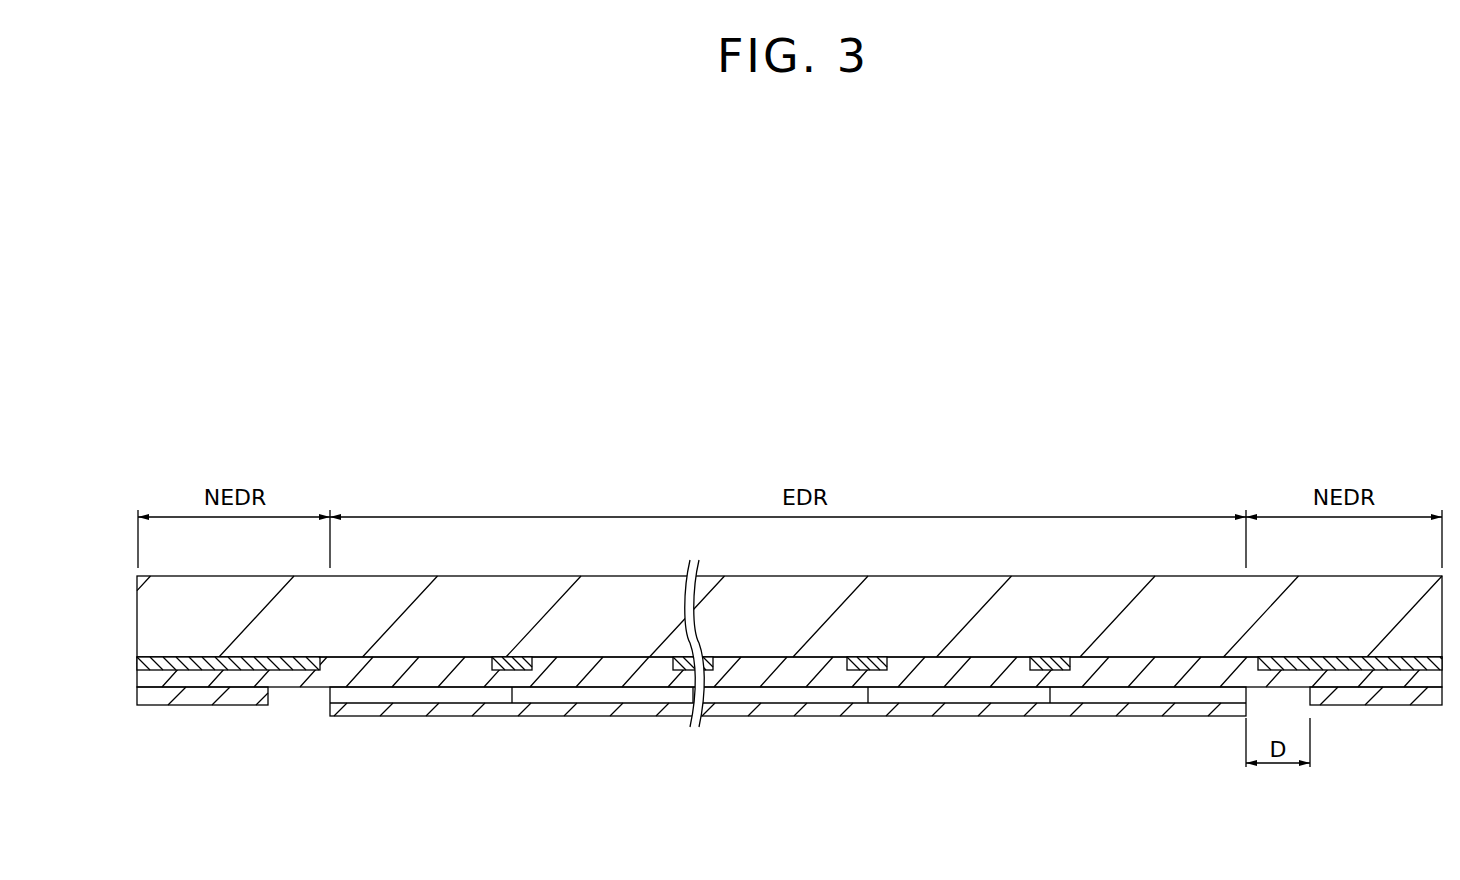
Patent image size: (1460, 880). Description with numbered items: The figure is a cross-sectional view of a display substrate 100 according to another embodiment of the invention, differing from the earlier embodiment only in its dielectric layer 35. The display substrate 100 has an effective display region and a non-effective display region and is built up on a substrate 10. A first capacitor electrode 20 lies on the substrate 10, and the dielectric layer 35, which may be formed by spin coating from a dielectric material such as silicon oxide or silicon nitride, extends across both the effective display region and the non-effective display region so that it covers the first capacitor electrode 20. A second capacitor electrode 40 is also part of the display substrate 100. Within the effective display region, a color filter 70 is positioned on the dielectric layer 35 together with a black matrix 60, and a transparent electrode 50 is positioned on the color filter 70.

The display substrate 100 is at (450, 484).
The substrate 10 is at (141, 609).
The first capacitor electrode 20 is at (137, 660).
The dielectric layer 35 is at (141, 677).
The second capacitor electrode 40 is at (137, 700).
The transparent electrode 50 is at (565, 708).
The black matrix 60 is at (500, 668).
The color filter 70 is at (393, 675).